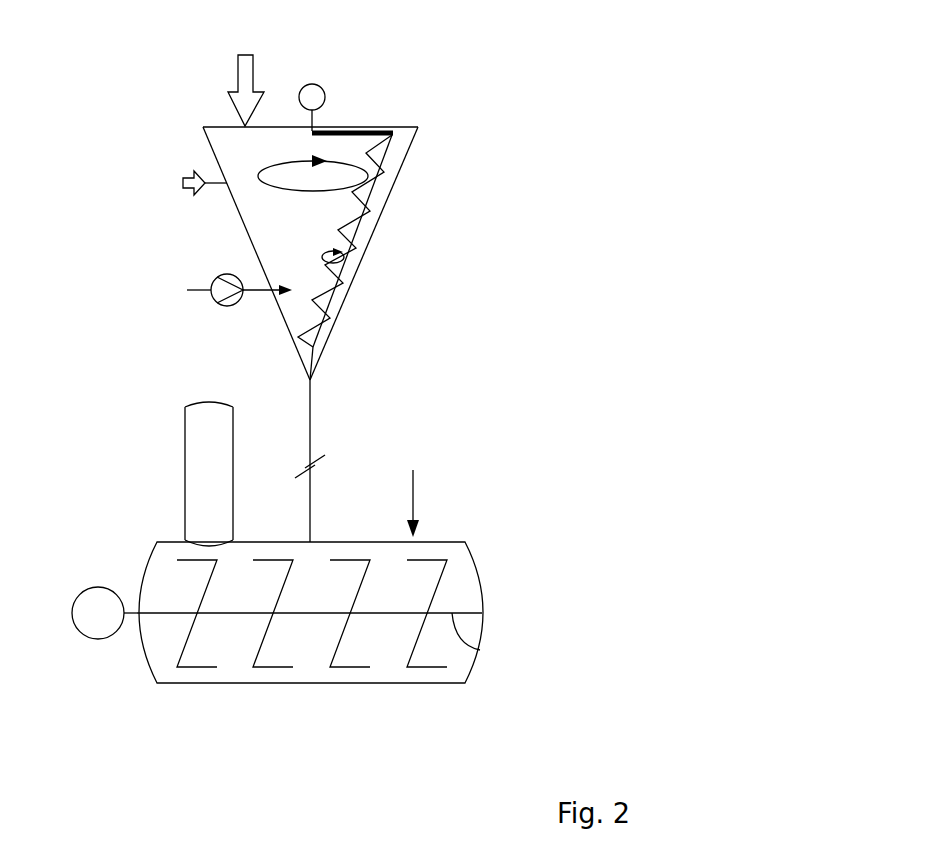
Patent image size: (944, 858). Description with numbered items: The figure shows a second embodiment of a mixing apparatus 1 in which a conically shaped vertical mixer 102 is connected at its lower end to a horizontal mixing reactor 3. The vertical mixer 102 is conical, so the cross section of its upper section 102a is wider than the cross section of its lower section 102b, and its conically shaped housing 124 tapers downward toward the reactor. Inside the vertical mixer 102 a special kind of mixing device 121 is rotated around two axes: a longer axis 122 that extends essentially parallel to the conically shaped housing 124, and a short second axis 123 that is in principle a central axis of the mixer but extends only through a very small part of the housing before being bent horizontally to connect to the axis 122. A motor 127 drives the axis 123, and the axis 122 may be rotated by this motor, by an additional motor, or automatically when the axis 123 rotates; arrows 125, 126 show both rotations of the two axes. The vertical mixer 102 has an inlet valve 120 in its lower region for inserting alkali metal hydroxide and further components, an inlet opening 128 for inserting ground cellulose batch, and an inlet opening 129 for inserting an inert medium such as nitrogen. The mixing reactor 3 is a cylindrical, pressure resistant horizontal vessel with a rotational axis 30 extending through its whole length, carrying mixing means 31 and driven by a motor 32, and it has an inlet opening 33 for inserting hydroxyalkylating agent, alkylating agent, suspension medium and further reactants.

The mixing apparatus 1 is at (140, 146).
The mixing reactor 3 is at (470, 593).
The rotational axis 30 is at (480, 650).
The mixing means 31 is at (445, 569).
The motor 32 is at (100, 601).
The inlet opening 33 is at (414, 500).
The conically shaped vertical mixer 102 is at (406, 118).
The upper section 102a is at (394, 190).
The lower section 102b is at (292, 340).
The inlet valve 120 is at (213, 294).
The mixing device 121 is at (362, 266).
The axis 122 is at (377, 211).
The second axis 123 is at (313, 125).
The conically shaped housing 124 is at (300, 337).
The arrow 125 is at (347, 297).
The arrow 126 is at (368, 155).
The motor 127 is at (312, 84).
The inlet opening 128 is at (248, 71).
The inlet opening 129 is at (183, 183).